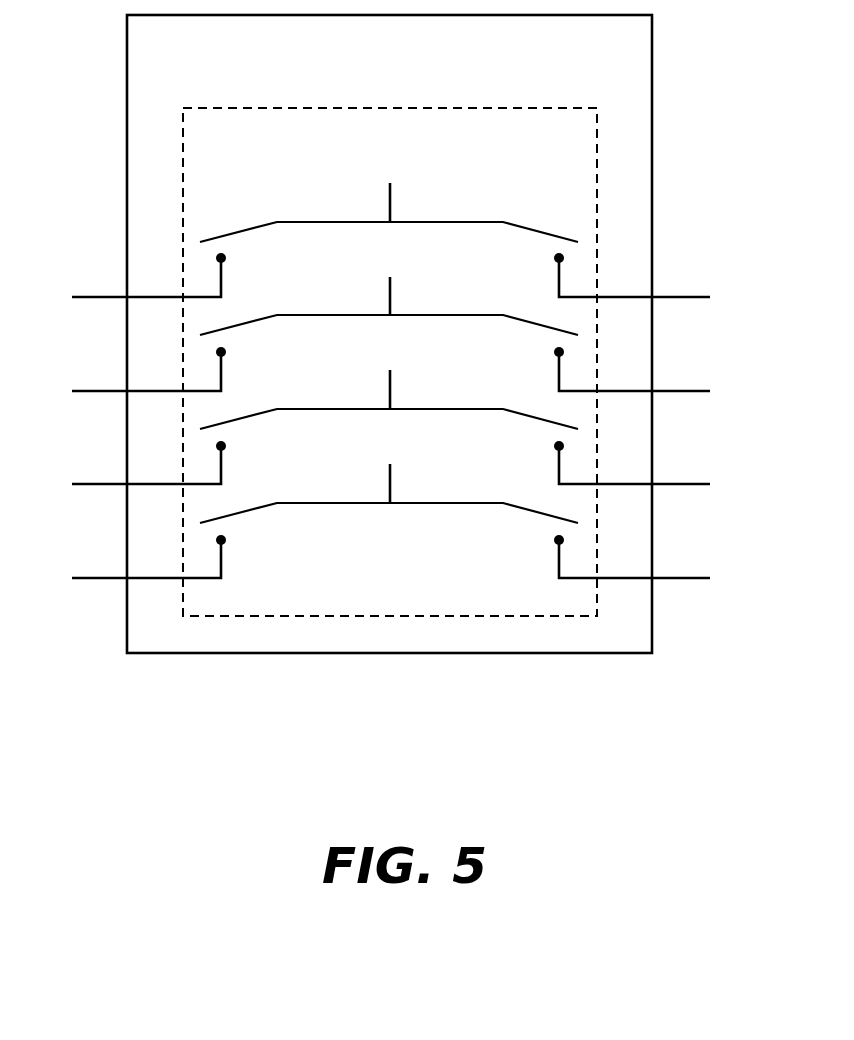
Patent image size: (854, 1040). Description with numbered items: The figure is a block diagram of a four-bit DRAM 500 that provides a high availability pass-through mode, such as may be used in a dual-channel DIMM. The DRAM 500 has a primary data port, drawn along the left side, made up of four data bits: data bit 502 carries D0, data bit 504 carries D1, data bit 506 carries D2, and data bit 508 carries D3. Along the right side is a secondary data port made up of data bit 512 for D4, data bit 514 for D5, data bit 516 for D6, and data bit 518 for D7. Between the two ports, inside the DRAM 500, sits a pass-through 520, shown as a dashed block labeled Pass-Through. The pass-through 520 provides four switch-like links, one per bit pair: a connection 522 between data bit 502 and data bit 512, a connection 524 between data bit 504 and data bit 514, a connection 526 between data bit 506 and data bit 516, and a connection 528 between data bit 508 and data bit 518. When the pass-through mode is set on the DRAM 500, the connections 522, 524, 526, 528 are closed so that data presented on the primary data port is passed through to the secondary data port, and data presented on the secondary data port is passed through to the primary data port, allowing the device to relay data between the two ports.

The four-bit (×4) DRAM 500 is at (186, 761).
The data bit D0 502 is at (88, 296).
The data bit D1 504 is at (88, 390).
The data bit D2 506 is at (88, 483).
The data bit D3 508 is at (88, 577).
The data bit D4 512 is at (694, 296).
The data bit D5 514 is at (694, 390).
The data bit D6 516 is at (694, 483).
The data bit D7 518 is at (694, 577).
The pass-through 520 is at (198, 108).
The connection 522 is at (314, 221).
The connection 524 is at (314, 314).
The connection 526 is at (314, 408).
The connection 528 is at (314, 502).